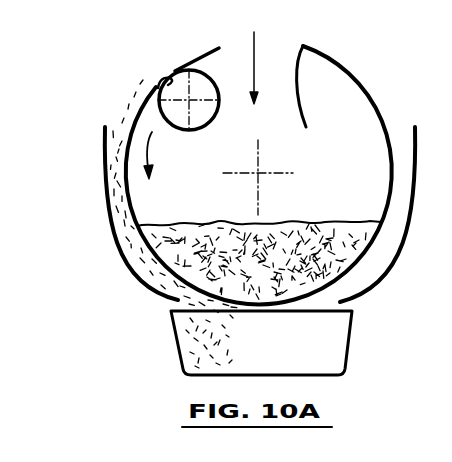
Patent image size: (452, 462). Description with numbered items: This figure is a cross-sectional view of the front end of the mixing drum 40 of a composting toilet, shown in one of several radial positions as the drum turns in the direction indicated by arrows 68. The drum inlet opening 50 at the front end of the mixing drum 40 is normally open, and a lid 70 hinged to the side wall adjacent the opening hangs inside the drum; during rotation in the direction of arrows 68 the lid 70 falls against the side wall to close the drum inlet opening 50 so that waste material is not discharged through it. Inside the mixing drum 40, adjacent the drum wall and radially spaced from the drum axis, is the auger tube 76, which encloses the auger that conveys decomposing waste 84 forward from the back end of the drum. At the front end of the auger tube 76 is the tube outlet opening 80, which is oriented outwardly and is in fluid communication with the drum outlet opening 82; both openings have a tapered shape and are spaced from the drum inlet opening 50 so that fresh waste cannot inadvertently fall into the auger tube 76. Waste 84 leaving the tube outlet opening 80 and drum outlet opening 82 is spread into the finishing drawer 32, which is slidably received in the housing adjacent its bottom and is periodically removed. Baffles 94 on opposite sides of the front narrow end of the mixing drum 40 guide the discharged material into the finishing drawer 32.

The finishing drawer 32 is at (352, 336).
The mixing drum 40 is at (357, 79).
The drum inlet opening 50 is at (219, 48).
The arrows 68 is at (151, 141).
The lid 70 is at (303, 104).
The auger tube 76 is at (213, 122).
The tube outlet opening 80 is at (162, 72).
The drum outlet opening 82 is at (176, 71).
The waste 84 is at (327, 223).
The baffles 94 is at (105, 203).